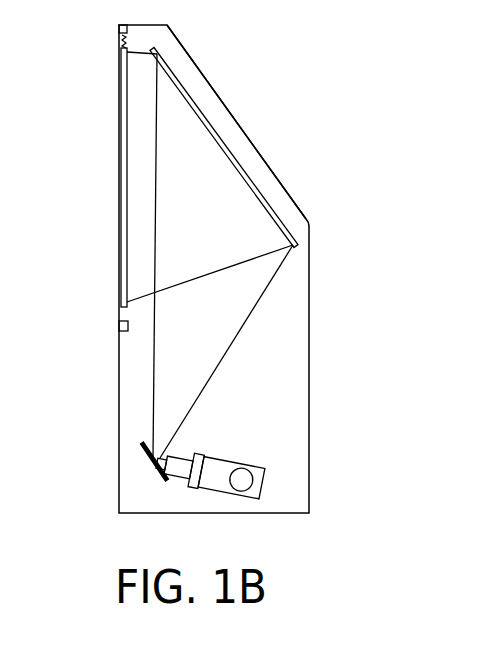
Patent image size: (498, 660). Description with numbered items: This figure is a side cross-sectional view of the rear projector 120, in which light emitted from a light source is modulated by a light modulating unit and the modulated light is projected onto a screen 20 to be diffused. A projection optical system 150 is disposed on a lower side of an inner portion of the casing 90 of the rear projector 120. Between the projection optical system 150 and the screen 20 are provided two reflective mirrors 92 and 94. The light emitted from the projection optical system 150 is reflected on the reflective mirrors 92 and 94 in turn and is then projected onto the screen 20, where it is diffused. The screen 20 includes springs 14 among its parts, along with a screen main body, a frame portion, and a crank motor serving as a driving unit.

The springs 14 is at (121, 41).
The screen 20 is at (105, 157).
The casing 90 is at (288, 194).
The reflective mirror 92 is at (153, 465).
The reflective mirror 94 is at (200, 106).
The rear projector 120 is at (259, 118).
The projection optical system 150 is at (235, 456).